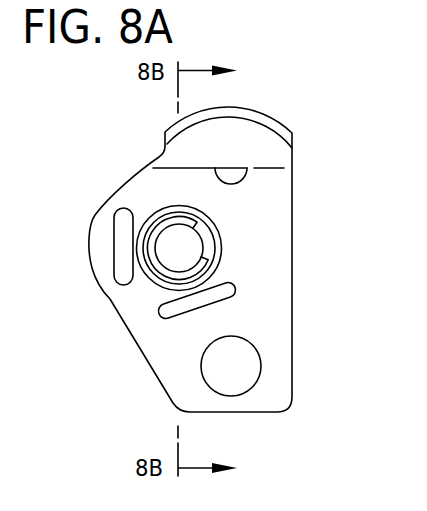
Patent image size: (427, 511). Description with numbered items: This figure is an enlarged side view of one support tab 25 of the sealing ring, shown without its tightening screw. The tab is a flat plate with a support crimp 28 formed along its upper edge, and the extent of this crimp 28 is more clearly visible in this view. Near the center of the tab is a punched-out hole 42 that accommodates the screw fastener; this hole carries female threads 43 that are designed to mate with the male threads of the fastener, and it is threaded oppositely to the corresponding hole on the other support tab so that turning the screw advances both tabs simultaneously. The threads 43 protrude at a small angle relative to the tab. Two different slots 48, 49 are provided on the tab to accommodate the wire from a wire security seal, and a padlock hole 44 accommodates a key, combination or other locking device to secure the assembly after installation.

The support tab 25 is at (292, 273).
The support crimp 28 is at (234, 178).
The punched-out hole 42 is at (172, 244).
The female threads 43 is at (149, 222).
The padlock hole 44 is at (257, 351).
The slot 48 is at (122, 286).
The slot 49 is at (168, 316).